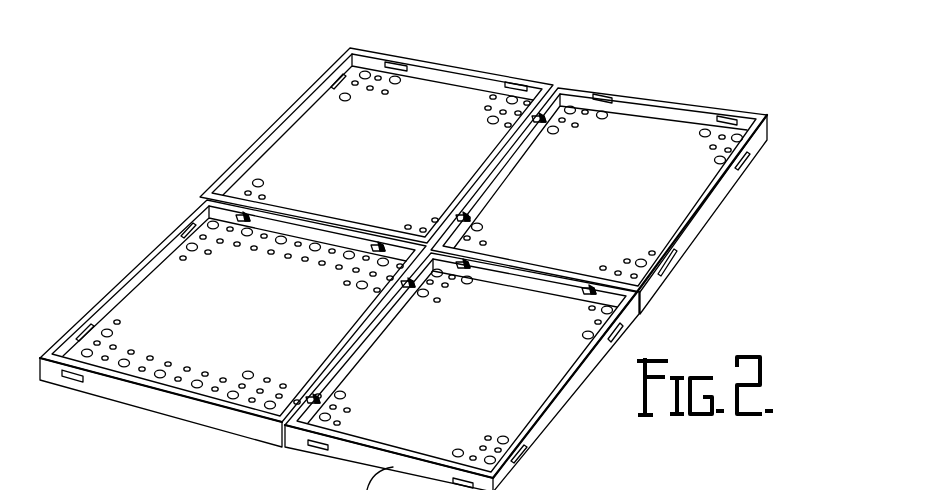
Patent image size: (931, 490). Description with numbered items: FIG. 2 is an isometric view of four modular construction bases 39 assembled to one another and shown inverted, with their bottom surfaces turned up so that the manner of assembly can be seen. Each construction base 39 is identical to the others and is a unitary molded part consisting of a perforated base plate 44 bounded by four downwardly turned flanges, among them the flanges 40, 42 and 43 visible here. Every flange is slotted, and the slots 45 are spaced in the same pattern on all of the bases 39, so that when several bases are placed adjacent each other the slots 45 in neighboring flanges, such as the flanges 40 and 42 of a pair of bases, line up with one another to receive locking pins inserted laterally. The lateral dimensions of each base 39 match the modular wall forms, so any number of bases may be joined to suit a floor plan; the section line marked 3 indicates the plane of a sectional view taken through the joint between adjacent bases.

The construction base 39 is at (280, 118).
The downwardly turned flange 40 is at (353, 325).
The downwardly turned flange 42 is at (368, 330).
The downwardly turned flange 43 is at (597, 297).
The perforated base plate 44 is at (555, 360).
The slot 45 is at (315, 446).
The section line 3- 3 is at (305, 359).